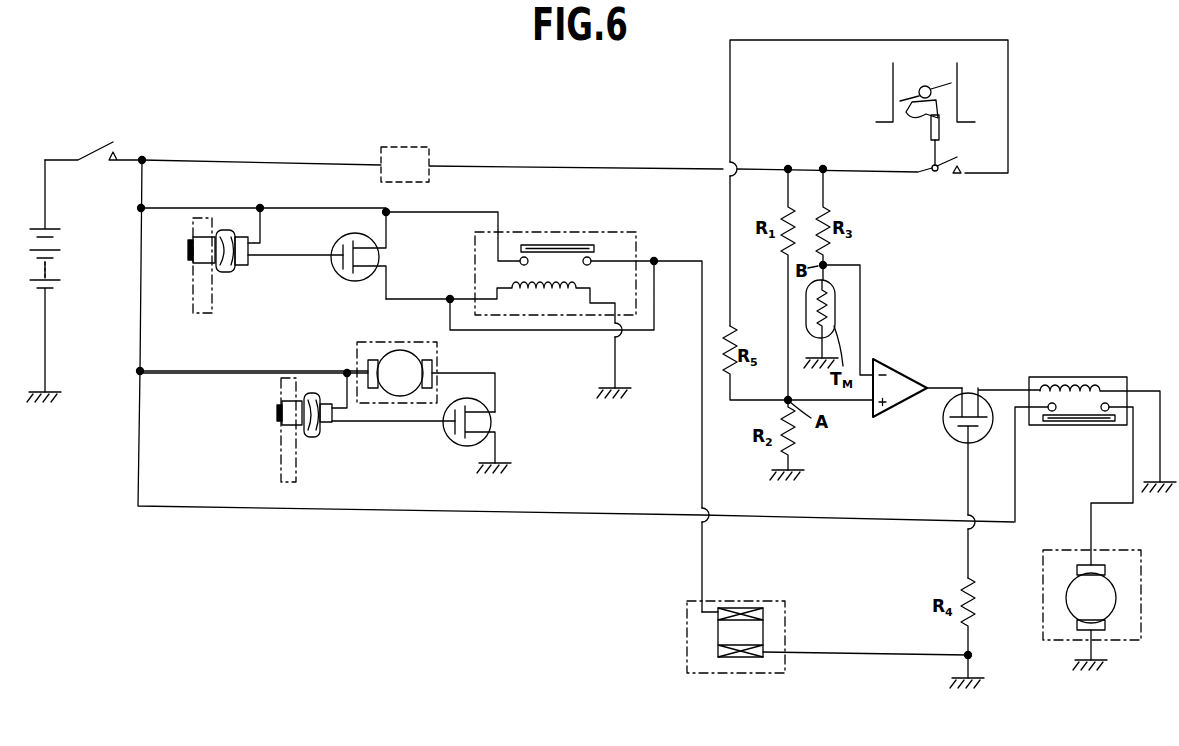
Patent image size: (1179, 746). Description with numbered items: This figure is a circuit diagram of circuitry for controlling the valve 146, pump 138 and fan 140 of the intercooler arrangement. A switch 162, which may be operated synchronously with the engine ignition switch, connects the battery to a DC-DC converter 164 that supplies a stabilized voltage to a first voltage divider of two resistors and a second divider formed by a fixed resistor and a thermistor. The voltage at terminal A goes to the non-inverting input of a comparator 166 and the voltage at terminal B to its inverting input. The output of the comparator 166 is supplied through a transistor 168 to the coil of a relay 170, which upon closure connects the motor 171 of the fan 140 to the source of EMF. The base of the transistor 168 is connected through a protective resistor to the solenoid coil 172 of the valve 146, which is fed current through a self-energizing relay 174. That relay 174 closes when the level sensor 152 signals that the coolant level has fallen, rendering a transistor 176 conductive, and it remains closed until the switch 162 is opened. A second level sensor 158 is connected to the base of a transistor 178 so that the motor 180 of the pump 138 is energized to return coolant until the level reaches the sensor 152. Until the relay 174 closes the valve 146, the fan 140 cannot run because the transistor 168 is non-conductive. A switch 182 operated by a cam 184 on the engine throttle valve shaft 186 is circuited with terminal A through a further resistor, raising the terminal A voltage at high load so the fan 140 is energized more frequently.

The pump 138 is at (437, 392).
The fan 140 is at (1043, 595).
The valve 146 is at (687, 633).
The level sensor 152 is at (200, 263).
The level sensor 158 is at (292, 432).
The switch 162 is at (99, 146).
The DC-DC converter 164 is at (416, 147).
The comparator 166 is at (902, 411).
The transistor 168 is at (967, 393).
The relay 170 is at (1080, 377).
The motor 171 is at (1069, 611).
The solenoid coil 172 is at (718, 651).
The self-energizing relay 174 is at (548, 232).
The transistor 176 is at (342, 281).
The transistor 178 is at (492, 430).
The motor 180 is at (408, 359).
The switch 182 is at (945, 174).
The cam 184 is at (890, 120).
The throttle valve shaft 186 is at (915, 88).